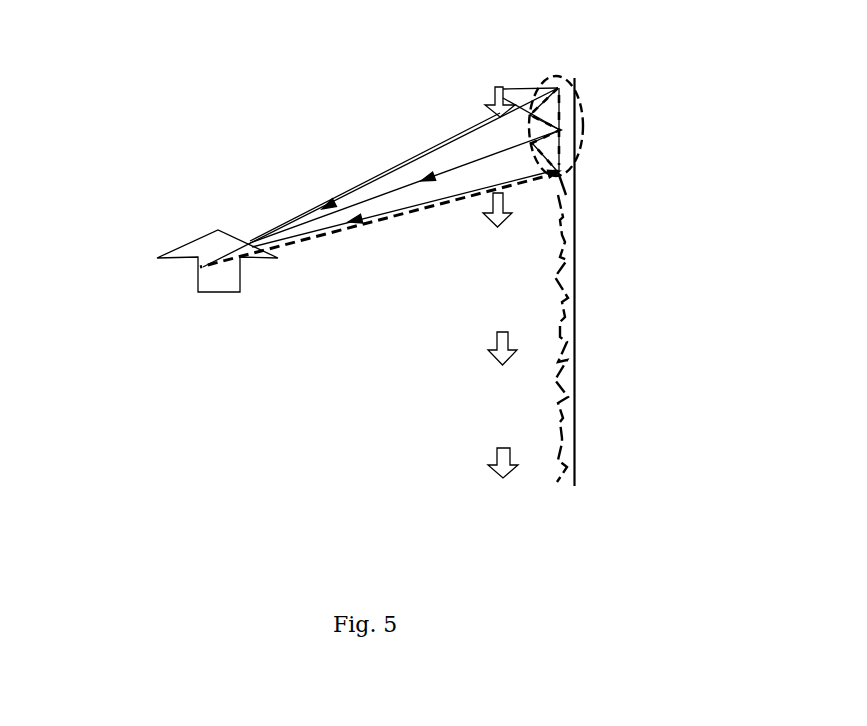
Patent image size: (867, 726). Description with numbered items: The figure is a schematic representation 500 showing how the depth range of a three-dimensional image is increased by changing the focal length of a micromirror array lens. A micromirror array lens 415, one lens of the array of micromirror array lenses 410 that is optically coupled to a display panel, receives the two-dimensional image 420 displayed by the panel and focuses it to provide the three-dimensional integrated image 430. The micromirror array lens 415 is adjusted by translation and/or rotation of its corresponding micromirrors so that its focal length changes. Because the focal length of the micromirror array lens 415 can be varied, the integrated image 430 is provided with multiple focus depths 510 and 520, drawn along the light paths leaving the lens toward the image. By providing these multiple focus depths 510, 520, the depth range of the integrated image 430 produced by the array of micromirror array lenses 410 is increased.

The fiber optic lighting system 500 is at (637, 78).
The micromirror array lens 415 is at (550, 75).
The two-dimensional image 420 is at (495, 87).
The focus depth 510 is at (253, 243).
The focus depth 520 is at (199, 257).
The integrated image 430 is at (182, 255).
The array of micromirror array lenses 410 is at (567, 488).